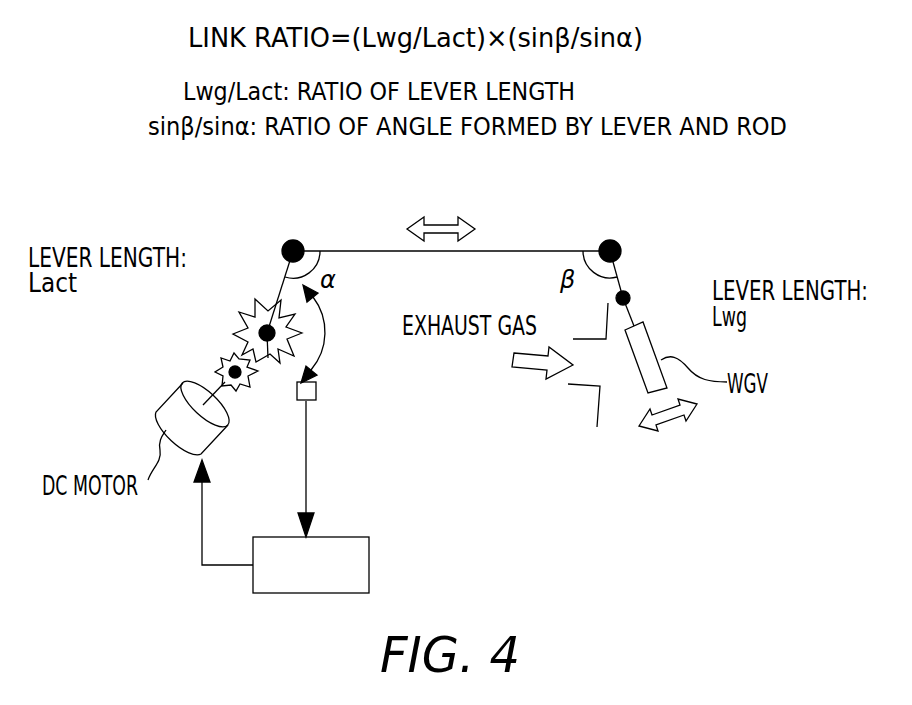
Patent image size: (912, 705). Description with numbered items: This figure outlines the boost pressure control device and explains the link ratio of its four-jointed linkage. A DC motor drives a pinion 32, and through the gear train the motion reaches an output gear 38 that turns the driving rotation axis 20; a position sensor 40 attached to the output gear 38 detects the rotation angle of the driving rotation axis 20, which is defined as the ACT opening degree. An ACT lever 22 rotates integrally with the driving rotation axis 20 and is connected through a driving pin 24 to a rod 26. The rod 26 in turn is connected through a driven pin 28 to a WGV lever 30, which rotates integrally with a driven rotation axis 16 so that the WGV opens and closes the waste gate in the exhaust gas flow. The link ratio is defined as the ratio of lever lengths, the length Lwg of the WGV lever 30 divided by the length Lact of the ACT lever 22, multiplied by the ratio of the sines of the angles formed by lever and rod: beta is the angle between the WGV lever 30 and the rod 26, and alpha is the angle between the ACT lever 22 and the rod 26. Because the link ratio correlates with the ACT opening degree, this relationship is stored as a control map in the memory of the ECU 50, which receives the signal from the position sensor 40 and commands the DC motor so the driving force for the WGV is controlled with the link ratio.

The driven rotation axis 16 is at (632, 302).
The driving rotation axis 20 is at (250, 326).
The ACT lever 22 is at (280, 284).
The driving pin 24 is at (293, 242).
The rod 26 is at (525, 250).
The driven pin 28 is at (608, 242).
The WGV lever 30 is at (622, 288).
The pinion 32 is at (216, 371).
The output gear 38 is at (268, 358).
The position sensor 40 is at (316, 392).
The ECU 50 is at (370, 563).